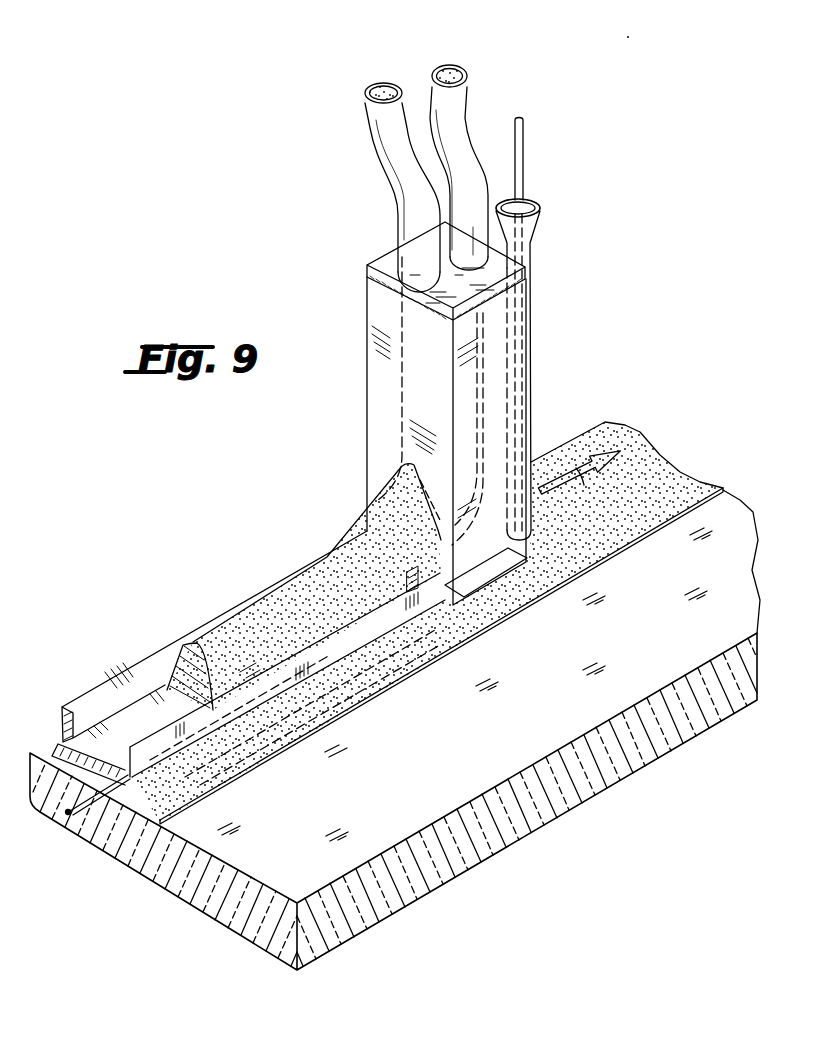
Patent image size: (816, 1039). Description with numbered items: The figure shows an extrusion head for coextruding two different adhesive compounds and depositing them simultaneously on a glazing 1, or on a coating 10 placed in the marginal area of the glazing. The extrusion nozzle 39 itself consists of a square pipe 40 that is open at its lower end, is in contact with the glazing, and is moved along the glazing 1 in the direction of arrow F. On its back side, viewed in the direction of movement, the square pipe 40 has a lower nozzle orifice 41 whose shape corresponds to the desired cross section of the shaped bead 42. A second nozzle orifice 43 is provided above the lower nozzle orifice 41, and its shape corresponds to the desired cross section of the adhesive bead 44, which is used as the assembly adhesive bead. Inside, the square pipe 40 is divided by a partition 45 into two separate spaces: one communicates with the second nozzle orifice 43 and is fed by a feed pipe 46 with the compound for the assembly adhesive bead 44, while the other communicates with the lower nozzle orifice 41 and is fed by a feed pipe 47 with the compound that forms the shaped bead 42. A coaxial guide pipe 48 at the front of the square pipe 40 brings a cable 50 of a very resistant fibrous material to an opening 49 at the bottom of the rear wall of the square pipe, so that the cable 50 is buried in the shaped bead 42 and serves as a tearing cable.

The glazing 1 is at (487, 838).
The coating 10 is at (643, 455).
The extrusion nozzle 39 is at (268, 284).
The square pipe 40 is at (377, 450).
The lower nozzle orifice 41 is at (440, 582).
The shaped bead 42 is at (82, 683).
The second nozzle orifice 43 is at (427, 498).
The adhesive bead 44 is at (237, 630).
The partition 45 is at (486, 388).
The feed pipe 46 is at (384, 83).
The feed pipe 47 is at (449, 64).
The coaxial guide pipe 48 is at (533, 256).
The opening 49 is at (509, 577).
The cable 50 is at (521, 119).